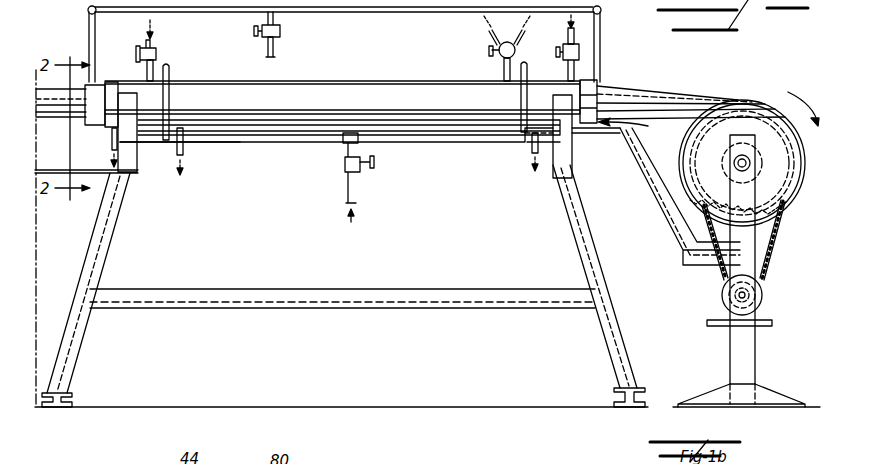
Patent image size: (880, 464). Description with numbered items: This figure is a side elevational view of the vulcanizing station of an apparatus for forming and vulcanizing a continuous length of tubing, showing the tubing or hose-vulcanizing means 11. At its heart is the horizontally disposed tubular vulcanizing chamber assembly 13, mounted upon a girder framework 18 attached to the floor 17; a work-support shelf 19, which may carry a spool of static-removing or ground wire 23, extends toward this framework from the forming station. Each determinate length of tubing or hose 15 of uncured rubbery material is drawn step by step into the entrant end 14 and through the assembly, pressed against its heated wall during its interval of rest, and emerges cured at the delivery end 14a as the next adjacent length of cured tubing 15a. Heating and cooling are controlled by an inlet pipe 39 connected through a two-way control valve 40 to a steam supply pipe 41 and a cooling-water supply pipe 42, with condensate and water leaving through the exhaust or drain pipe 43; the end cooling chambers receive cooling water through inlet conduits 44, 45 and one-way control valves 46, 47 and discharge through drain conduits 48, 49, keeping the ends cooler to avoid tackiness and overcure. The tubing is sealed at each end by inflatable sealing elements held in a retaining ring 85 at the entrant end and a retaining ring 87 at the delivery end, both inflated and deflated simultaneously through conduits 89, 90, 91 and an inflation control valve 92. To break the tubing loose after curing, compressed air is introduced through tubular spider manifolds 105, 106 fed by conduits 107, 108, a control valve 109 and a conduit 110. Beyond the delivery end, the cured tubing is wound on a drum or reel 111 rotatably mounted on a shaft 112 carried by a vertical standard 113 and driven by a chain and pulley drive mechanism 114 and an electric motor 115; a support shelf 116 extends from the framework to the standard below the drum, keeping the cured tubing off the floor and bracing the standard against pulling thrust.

The tubing or hose-vulcanizing means 11 is at (296, 136).
The tubular vulcanizing chamber assembly 13 is at (340, 84).
The entrant end 14 is at (96, 81).
The delivery end 14a is at (639, 127).
The determinate length of tubing or hose 15 is at (61, 124).
The next adjacent determinate length of cured tubing 15a is at (630, 92).
The floor 17 is at (322, 396).
The girder framework 18 is at (100, 252).
The work-support shelf 19 is at (110, 176).
The static-removing or ground wire 23 is at (45, 122).
The inlet pipe 39 is at (503, 68).
The two-way control valve 40 is at (488, 52).
The supply pipe 41 is at (490, 37).
The supply pipe 42 is at (518, 38).
The exhaust or drain pipe 43 is at (185, 142).
The inlet conduit 44 is at (156, 66).
The inlet conduit 45 is at (578, 66).
The one-way control valve 46 is at (138, 52).
The one-way control valve 47 is at (576, 50).
The drain conduit 48 is at (112, 150).
The drain conduit 49 is at (530, 148).
The retaining ring 85 is at (102, 128).
The retaining ring 87 is at (590, 84).
The conduit 89 is at (87, 10).
The conduit 90 is at (600, 12).
The conduit 91 is at (276, 52).
The inflation control valve 92 is at (252, 30).
The tubular spider manifold 105 is at (172, 78).
The tubular spider manifold 106 is at (452, 136).
The conduit 107 is at (250, 143).
The conduit 108 is at (455, 142).
The control valve 109 is at (375, 164).
The conduit 110 is at (357, 186).
The drum or reel 111 is at (748, 168).
The shaft 112 is at (742, 163).
The vertical standard 113 is at (752, 352).
The chain and pulley drive mechanism 114 is at (776, 235).
The electric motor 115 is at (762, 293).
The support shelf 116 is at (660, 214).